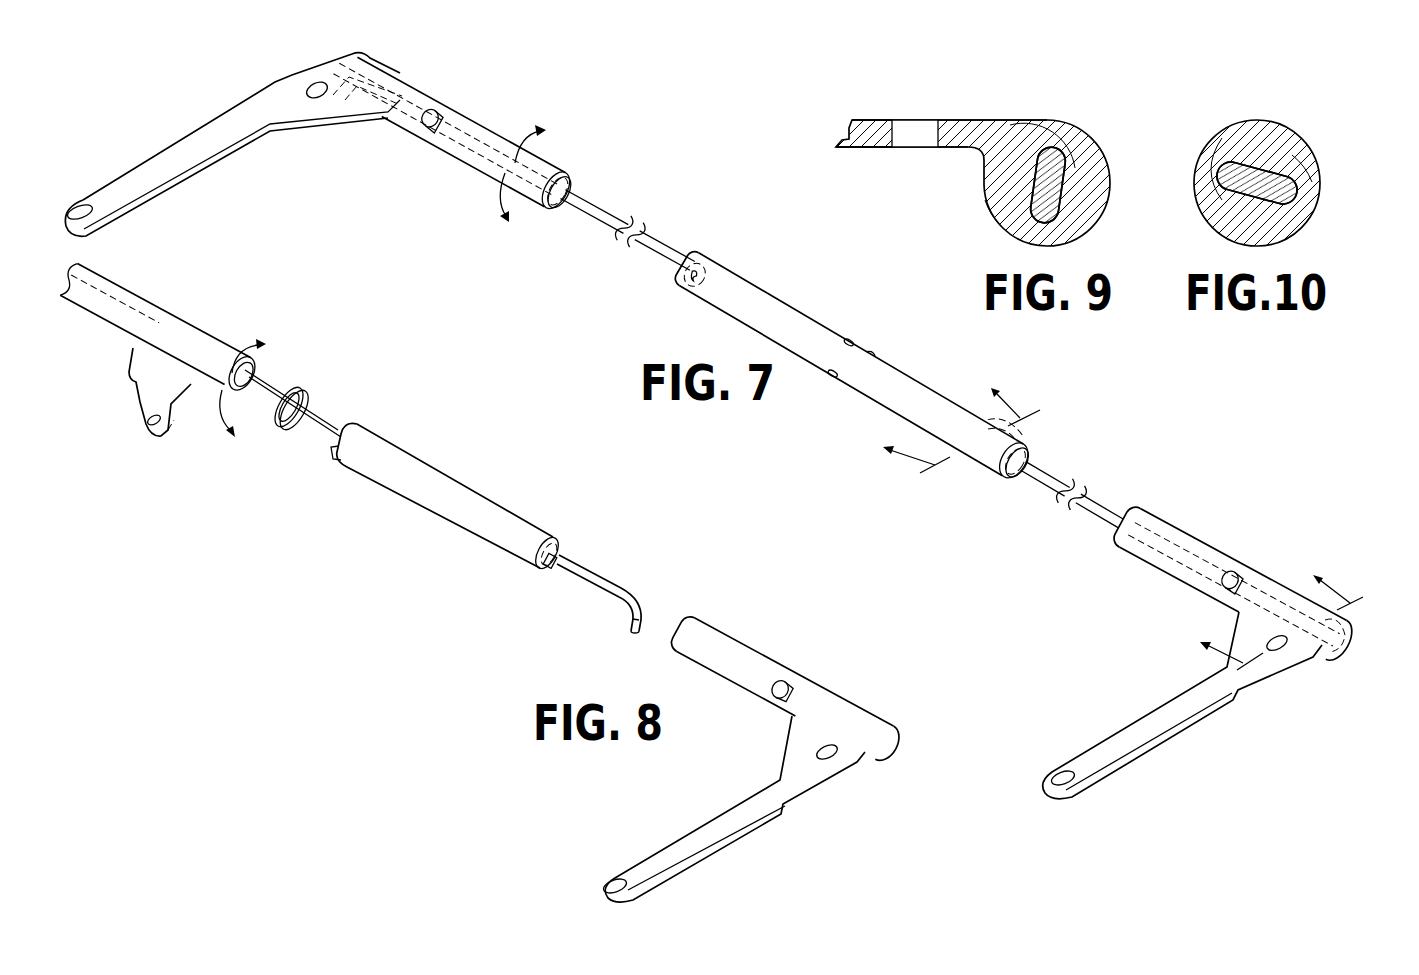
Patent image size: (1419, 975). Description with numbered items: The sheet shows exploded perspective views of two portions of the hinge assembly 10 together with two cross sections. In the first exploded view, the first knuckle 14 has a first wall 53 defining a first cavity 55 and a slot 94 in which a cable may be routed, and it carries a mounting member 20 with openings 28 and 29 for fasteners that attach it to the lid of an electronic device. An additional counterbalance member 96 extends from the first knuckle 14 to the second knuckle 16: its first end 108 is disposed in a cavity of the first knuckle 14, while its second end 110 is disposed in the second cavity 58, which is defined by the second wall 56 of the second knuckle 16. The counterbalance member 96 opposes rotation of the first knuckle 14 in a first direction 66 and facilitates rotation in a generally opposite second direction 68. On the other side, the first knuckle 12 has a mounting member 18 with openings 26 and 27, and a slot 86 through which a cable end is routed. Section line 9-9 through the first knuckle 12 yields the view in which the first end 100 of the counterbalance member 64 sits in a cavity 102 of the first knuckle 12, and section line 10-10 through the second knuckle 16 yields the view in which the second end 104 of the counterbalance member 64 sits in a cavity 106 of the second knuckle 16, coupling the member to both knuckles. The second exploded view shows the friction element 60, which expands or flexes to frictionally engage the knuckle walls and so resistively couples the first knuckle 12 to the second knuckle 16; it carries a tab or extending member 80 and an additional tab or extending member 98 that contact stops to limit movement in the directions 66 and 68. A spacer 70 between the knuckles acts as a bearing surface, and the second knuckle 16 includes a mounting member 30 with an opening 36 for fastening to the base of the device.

In FIG. 7, the line 9- 9 is at (1288, 626).
In FIG. 7, the hinge assembly 10 is at (974, 441).
In FIG. 7, the first knuckle 12 is at (1194, 513).
In FIG. 8, the first knuckle 12 is at (742, 623).
In FIG. 9, the first knuckle 12 is at (1097, 124).
In FIG. 7, the first knuckle 14 is at (507, 124).
In FIG. 7, the second knuckle 16 is at (803, 299).
In FIG. 8, the second knuckle 16 is at (205, 316).
In FIG. 10, the second knuckle 16 is at (1305, 117).
In FIG. 7, the mounting member 18 is at (1138, 725).
In FIG. 8, the mounting member 18 is at (693, 830).
In FIG. 9, the mounting member 18 is at (840, 148).
In FIG. 7, the mounting member 20 is at (155, 160).
In FIG. 7, the opening 26 is at (1282, 658).
In FIG. 8, the opening 26 is at (835, 762).
In FIG. 9, the opening 26 is at (900, 120).
In FIG. 7, the opening 27 is at (1063, 770).
In FIG. 8, the opening 27 is at (616, 878).
In FIG. 7, the opening 28 is at (306, 86).
In FIG. 7, the opening 29 is at (80, 205).
In FIG. 8, the mounting member 30 is at (132, 405).
In FIG. 8, the opening 36 is at (158, 438).
In FIG. 7, the first wall 53 is at (556, 212).
In FIG. 7, the first cavity 55 is at (570, 210).
In FIG. 7, the second wall 56 is at (1012, 472).
In FIG. 7, the second cavity 58 is at (1032, 472).
In FIG. 8, the friction element 60 is at (485, 479).
In FIG. 7, the counterbalance member 64 is at (1110, 483).
In FIG. 8, the counterbalance member 64 is at (617, 566).
In FIG. 9, the counterbalance member 64 is at (1030, 138).
In FIG. 10, the counterbalance member 64 is at (1302, 224).
In FIG. 7, the first direction 66 is at (497, 205).
In FIG. 8, the first direction 66 is at (215, 420).
In FIG. 7, the second direction 68 is at (550, 148).
In FIG. 8, the second direction 68 is at (270, 348).
In FIG. 8, the spacer 70 is at (305, 388).
In FIG. 8, the tab or extending member 80 is at (549, 572).
In FIG. 7, the slot 86 is at (1233, 571).
In FIG. 8, the slot 86 is at (783, 680).
In FIG. 7, the slot 94 is at (436, 112).
In FIG. 7, the counterbalance member 96 is at (607, 198).
In FIG. 8, the tab or extending member 98 is at (331, 460).
In FIG. 7, the first end 100 is at (1338, 655).
In FIG. 8, the first end 100 is at (625, 633).
In FIG. 9, the first end 100 is at (1000, 238).
In FIG. 9, the cavity 102 is at (1108, 158).
In FIG. 7, the second end 104 is at (972, 452).
In FIG. 10, the second end 104 is at (1312, 160).
In FIG. 10, the cavity 106 is at (1230, 146).
In FIG. 7, the first end 108 is at (406, 96).
In FIG. 7, the second end 110 is at (713, 288).